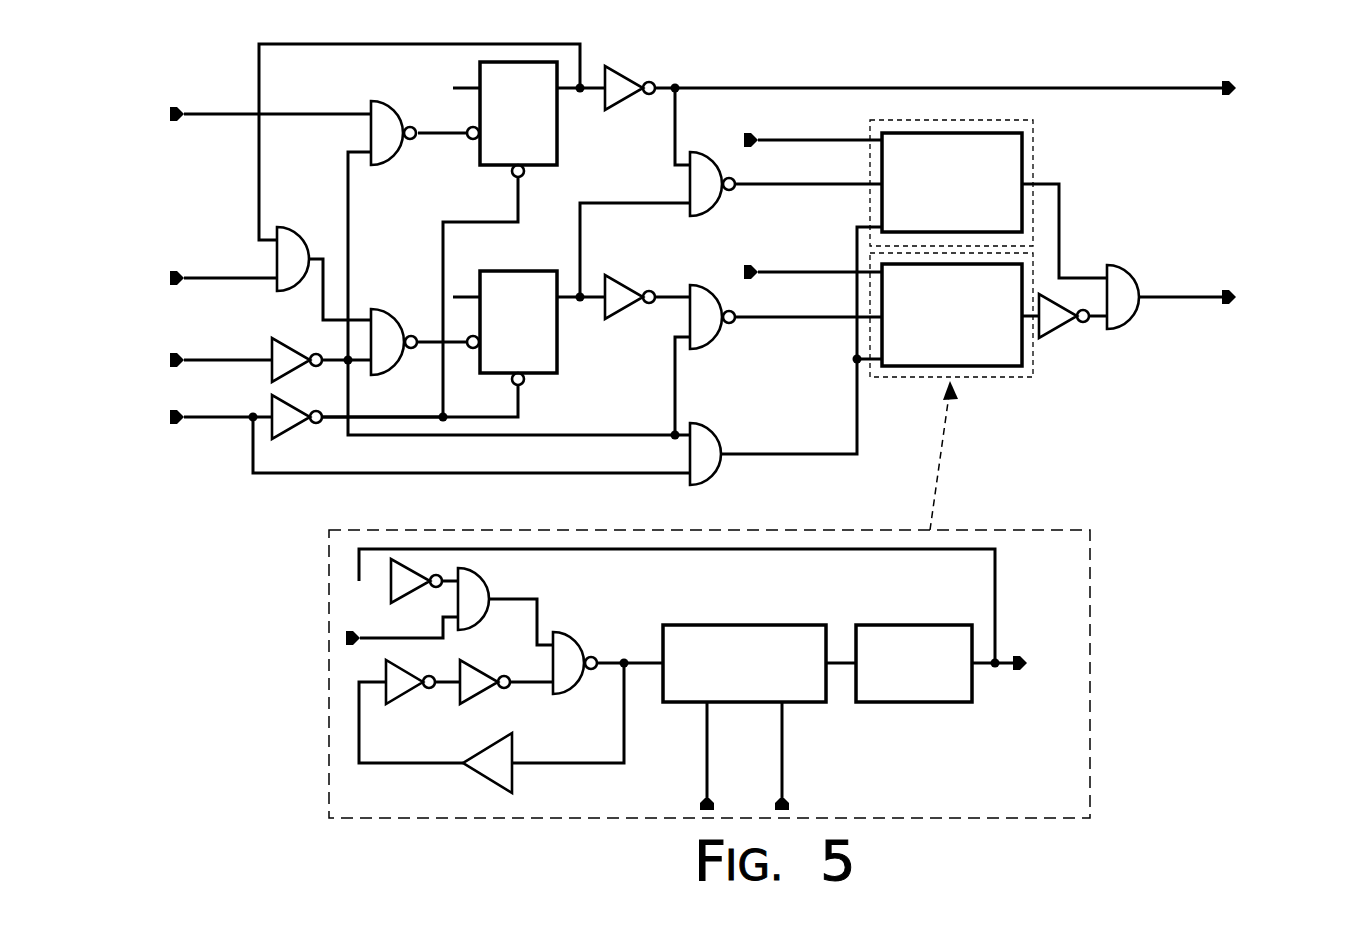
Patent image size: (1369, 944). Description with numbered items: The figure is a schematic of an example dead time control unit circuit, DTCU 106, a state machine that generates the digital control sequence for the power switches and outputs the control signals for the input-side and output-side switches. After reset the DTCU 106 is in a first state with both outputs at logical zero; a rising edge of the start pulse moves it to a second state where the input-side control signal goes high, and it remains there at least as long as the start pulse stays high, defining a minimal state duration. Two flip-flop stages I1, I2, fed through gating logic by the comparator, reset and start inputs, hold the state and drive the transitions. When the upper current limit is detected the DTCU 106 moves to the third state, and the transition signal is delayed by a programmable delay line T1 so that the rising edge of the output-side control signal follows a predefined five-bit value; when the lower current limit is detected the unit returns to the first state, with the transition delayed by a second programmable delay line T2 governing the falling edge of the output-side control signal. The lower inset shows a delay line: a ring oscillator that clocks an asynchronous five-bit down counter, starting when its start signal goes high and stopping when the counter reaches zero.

The dead time control unit 106 is at (1262, 138).
The flip-flop I1 is at (510, 119).
The flip-flop I2 is at (510, 328).
The programmable delay T1 is at (951, 183).
The programmable delay T2 is at (951, 315).